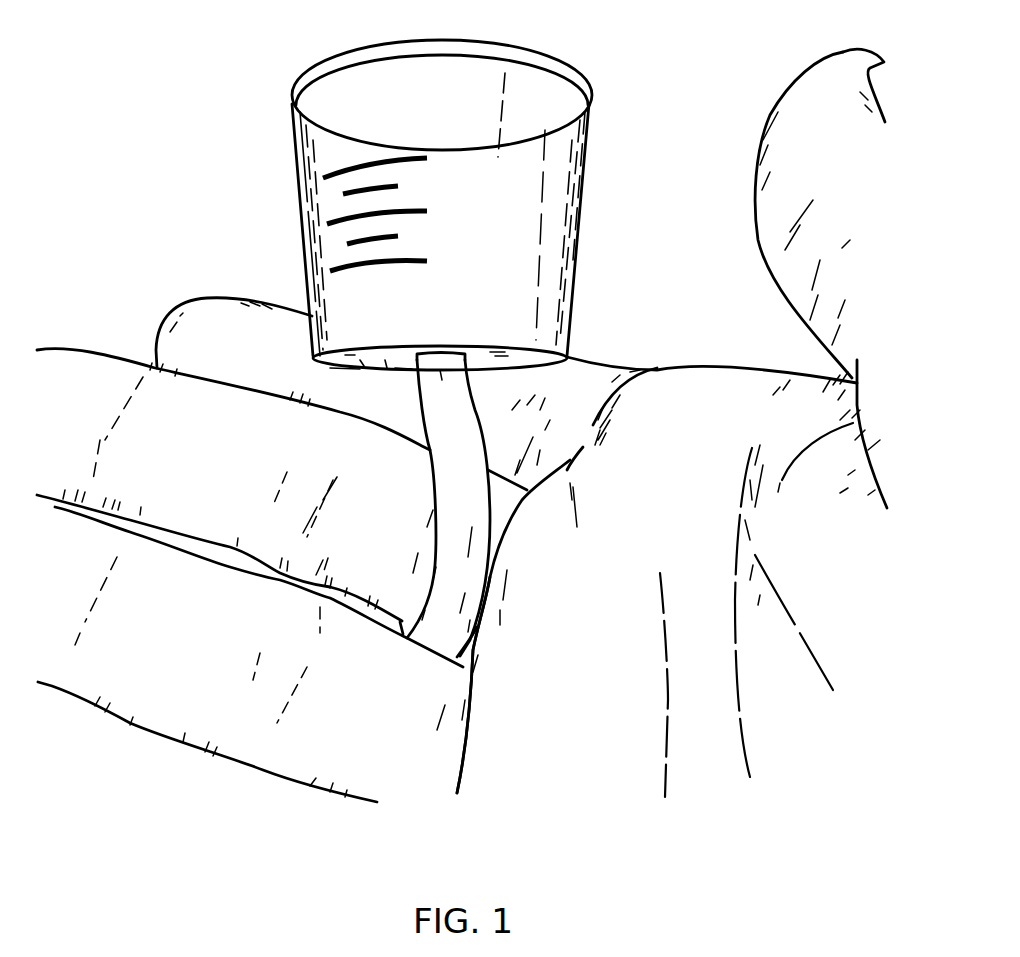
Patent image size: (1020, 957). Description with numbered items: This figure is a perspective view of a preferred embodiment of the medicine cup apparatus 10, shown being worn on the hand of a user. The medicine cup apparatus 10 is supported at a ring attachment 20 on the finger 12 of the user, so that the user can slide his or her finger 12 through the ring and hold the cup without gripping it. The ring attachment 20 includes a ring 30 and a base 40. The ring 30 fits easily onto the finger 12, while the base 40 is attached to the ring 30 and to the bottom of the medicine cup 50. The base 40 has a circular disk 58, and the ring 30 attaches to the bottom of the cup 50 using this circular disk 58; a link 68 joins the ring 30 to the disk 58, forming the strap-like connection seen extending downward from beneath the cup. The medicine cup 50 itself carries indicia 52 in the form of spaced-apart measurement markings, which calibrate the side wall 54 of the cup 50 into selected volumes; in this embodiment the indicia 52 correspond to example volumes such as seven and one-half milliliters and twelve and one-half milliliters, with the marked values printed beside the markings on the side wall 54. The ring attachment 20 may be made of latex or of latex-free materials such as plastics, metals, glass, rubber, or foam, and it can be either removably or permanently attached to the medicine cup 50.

The medicine cup apparatus 10 is at (197, 229).
The finger 12 is at (208, 455).
The ring attachment 20 is at (514, 412).
The ring 30 is at (472, 583).
The base 40 is at (387, 367).
The medicine cup 50 is at (538, 221).
The indicia 52 is at (330, 271).
The side wall 54 is at (503, 325).
The circular disk 58 is at (403, 363).
The link 68 is at (440, 372).